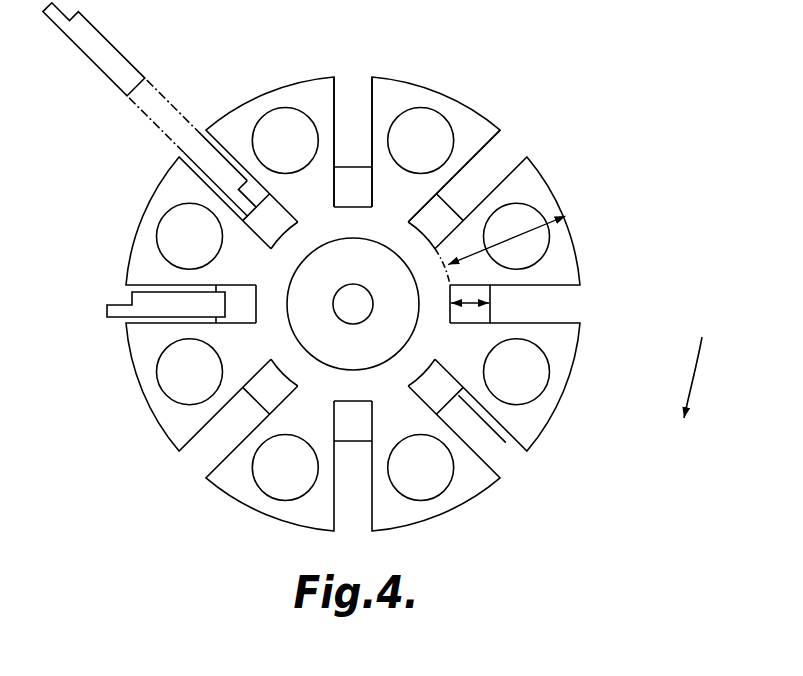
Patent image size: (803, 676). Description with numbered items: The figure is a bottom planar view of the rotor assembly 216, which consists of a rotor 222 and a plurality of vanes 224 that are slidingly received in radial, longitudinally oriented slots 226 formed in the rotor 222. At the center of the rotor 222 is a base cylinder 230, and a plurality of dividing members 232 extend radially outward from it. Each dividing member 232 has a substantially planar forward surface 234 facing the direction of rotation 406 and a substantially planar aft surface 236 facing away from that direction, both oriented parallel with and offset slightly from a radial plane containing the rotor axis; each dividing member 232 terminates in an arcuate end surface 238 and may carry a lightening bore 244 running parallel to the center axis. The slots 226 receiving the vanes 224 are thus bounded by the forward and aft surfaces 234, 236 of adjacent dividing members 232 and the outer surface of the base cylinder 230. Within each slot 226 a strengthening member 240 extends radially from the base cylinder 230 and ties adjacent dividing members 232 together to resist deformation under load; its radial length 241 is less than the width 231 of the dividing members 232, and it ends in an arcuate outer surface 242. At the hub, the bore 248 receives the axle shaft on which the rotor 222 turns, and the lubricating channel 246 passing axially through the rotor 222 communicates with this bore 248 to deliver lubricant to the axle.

The rotor assembly 216 is at (627, 128).
The rotor 222 is at (576, 238).
The vanes 224 is at (92, 66).
The slots 226 is at (353, 95).
The base cylinder 230 is at (297, 384).
The width of the dividing members 231 is at (535, 225).
The dividing members 232 is at (143, 213).
The forward surface 234 is at (494, 138).
The aft surface 236 is at (367, 78).
The arcuate end surface 238 is at (270, 513).
The strengthening member 240 is at (438, 395).
The length of the strengthening member 241 is at (474, 299).
The arcuate outer surface 242 is at (506, 443).
The lightening bore 244 is at (550, 370).
The lubricating channel 246 is at (343, 310).
The bore 248 is at (377, 240).
The direction of rotation 406 is at (700, 373).